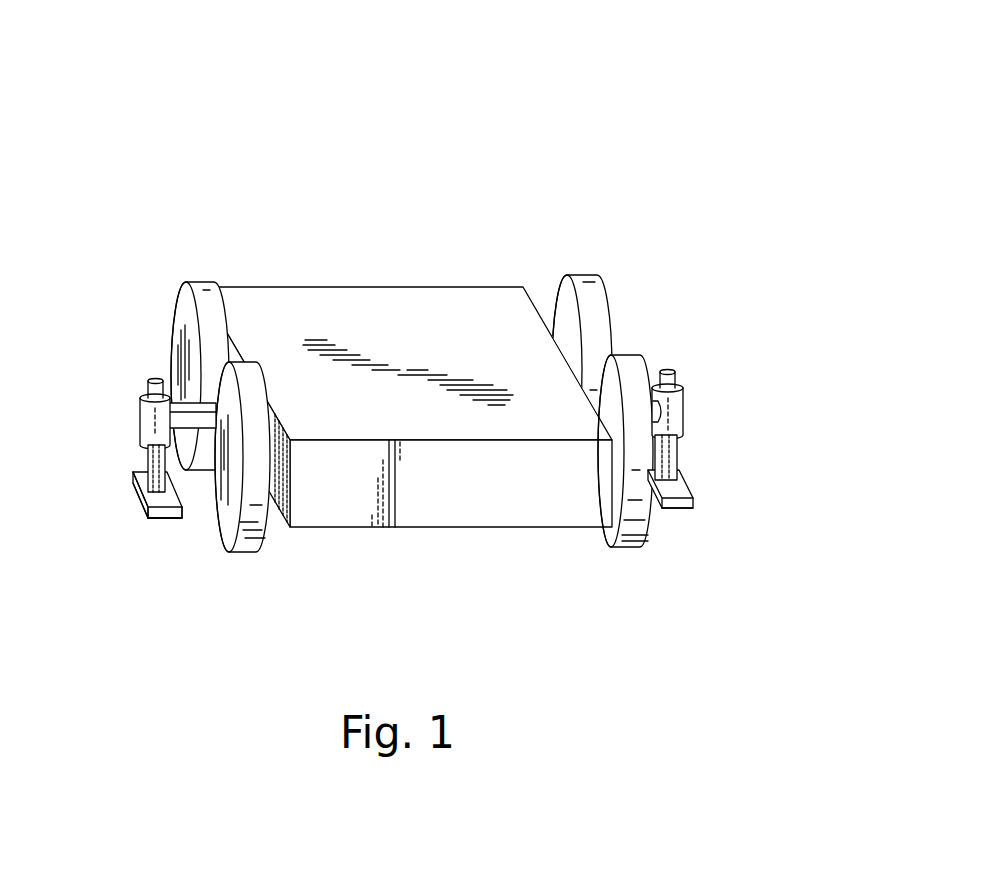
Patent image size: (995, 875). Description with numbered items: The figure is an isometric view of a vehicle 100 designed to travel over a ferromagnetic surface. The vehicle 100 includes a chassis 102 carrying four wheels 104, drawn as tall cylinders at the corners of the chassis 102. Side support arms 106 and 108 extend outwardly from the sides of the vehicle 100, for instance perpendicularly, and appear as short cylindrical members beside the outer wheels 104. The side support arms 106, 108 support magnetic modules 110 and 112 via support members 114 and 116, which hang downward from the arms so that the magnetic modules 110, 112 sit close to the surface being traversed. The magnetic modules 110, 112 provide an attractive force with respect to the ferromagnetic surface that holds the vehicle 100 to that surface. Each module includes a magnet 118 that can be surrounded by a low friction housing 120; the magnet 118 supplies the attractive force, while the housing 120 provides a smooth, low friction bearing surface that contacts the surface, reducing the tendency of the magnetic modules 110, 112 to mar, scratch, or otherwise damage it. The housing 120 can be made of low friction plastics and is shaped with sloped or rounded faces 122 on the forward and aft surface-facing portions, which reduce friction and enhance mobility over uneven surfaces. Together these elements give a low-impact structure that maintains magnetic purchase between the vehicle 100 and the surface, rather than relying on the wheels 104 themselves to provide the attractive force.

The vehicle 100 is at (569, 85).
The chassis 102 is at (459, 343).
The wheels 104 is at (193, 282).
The side support arm 106 is at (661, 415).
The side support arm 108 is at (173, 422).
The magnetic module 110 is at (694, 493).
The magnetic module 112 is at (138, 498).
The support member 114 is at (678, 457).
The support member 116 is at (149, 461).
The magnet 118 is at (146, 503).
The low friction housing 120 is at (146, 512).
The sloped faces 122 is at (154, 518).